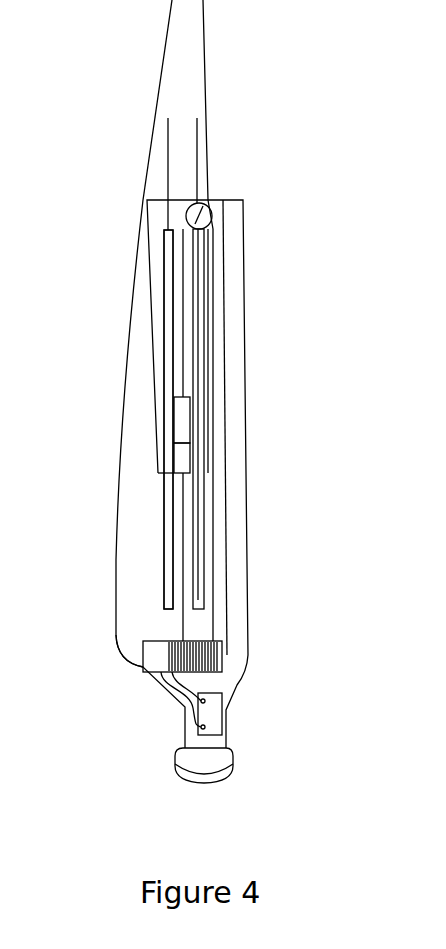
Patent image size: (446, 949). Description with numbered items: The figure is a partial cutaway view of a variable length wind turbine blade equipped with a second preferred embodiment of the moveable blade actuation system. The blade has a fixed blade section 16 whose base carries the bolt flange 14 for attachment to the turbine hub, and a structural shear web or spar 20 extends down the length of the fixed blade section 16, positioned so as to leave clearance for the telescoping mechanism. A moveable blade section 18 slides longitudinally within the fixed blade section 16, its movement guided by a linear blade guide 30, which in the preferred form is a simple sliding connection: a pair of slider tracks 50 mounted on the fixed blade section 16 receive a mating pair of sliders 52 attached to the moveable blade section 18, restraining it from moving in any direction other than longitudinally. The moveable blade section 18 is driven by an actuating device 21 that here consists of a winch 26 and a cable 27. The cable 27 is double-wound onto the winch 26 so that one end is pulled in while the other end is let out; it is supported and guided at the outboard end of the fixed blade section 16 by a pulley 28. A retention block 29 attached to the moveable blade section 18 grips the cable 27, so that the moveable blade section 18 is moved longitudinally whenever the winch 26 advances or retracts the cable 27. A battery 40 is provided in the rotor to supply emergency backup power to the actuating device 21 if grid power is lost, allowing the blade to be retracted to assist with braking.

The bolt flange 14 is at (230, 778).
The fixed blade section 16 is at (237, 474).
The moveable blade section 18 is at (195, 62).
The spar 20 is at (225, 398).
The actuating device 21 is at (121, 664).
The winch 26 is at (223, 658).
The cable 27 is at (182, 617).
The pulley 28 is at (211, 205).
The retention block 29 is at (172, 398).
The linear blade guide 30 is at (141, 573).
The battery 40 is at (212, 714).
The slider tracks 50 is at (167, 538).
The sliders 52 is at (163, 149).